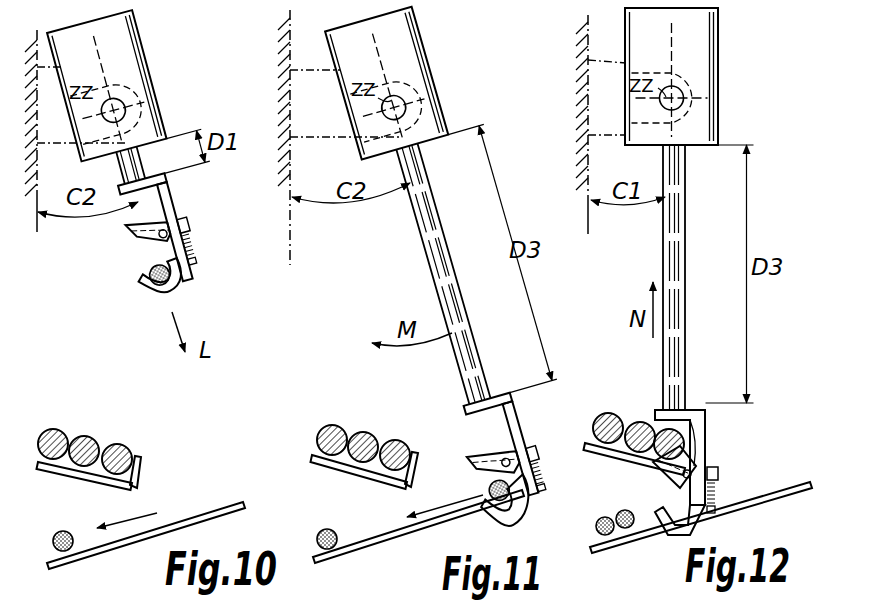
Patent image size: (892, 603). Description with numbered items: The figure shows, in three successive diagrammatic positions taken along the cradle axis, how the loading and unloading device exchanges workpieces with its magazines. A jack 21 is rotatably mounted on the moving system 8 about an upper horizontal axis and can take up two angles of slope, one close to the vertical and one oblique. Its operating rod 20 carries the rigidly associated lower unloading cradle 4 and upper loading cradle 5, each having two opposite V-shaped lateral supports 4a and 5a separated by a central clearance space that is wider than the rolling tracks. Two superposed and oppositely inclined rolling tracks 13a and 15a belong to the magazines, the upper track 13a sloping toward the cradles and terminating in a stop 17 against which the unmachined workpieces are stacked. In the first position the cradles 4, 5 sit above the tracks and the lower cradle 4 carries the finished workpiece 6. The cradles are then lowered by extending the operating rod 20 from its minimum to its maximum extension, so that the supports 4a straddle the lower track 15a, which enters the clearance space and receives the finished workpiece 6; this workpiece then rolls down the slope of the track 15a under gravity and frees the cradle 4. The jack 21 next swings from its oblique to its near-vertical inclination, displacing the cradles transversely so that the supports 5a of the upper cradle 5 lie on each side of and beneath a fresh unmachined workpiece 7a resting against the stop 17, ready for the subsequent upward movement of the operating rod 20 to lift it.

In FIG. 10, the lower unloading cradle 4 is at (160, 278).
In FIG. 11, the lower unloading cradle 4 is at (506, 503).
In FIG. 12, the V-shaped lateral supports of the lower cradle 4a is at (670, 535).
In FIG. 10, the upper loading cradle 5 is at (149, 233).
In FIG. 11, the upper loading cradle 5 is at (494, 463).
In FIG. 12, the V-shaped lateral supports of the upper cradle 5a is at (662, 477).
In FIG. 10, the finished workpiece 6 is at (159, 275).
In FIG. 11, the finished workpiece 6 is at (499, 490).
In FIG. 12, the finished workpiece 6 is at (624, 510).
In FIG. 10, the fresh unmachined workpiece 7a is at (117, 443).
In FIG. 11, the fresh unmachined workpiece 7a is at (410, 444).
In FIG. 12, the fresh unmachined workpiece 7a is at (692, 432).
In FIG. 10, the moving system 8 is at (62, 138).
In FIG. 11, the moving system 8 is at (314, 131).
In FIG. 12, the moving system 8 is at (606, 128).
In FIG. 10, the upper rolling track 13a is at (82, 470).
In FIG. 11, the upper rolling track 13a is at (337, 462).
In FIG. 12, the upper rolling track 13a is at (588, 450).
In FIG. 10, the lower rolling track 15a is at (125, 540).
In FIG. 11, the lower rolling track 15a is at (398, 530).
In FIG. 12, the lower rolling track 15a is at (754, 497).
In FIG. 10, the stop 17 is at (140, 469).
In FIG. 11, the stop 17 is at (417, 453).
In FIG. 11, the operating rod 20 is at (443, 273).
In FIG. 12, the operating rod 20 is at (694, 277).
In FIG. 10, the jack 21 is at (106, 85).
In FIG. 11, the jack 21 is at (386, 83).
In FIG. 12, the jack 21 is at (671, 76).